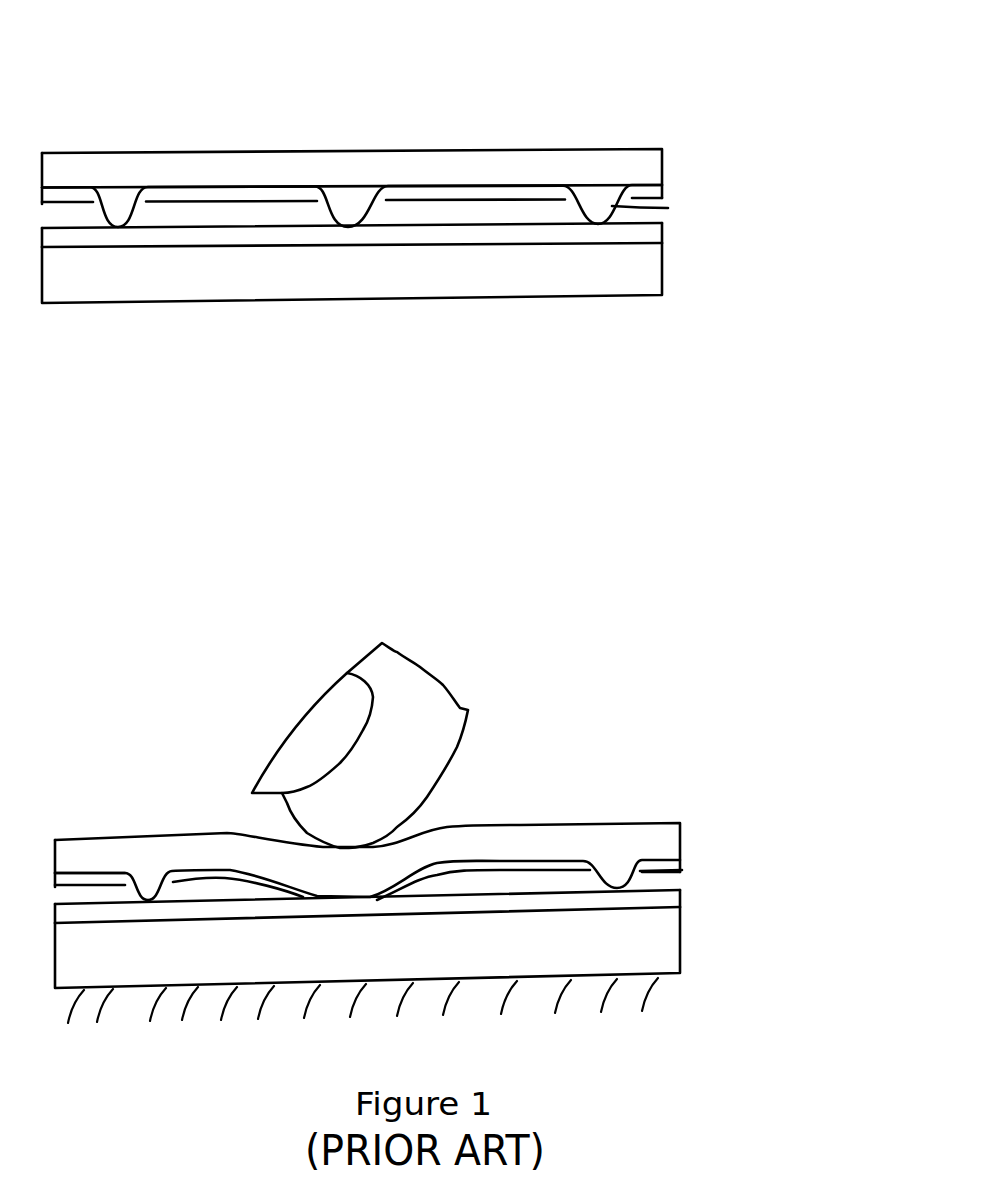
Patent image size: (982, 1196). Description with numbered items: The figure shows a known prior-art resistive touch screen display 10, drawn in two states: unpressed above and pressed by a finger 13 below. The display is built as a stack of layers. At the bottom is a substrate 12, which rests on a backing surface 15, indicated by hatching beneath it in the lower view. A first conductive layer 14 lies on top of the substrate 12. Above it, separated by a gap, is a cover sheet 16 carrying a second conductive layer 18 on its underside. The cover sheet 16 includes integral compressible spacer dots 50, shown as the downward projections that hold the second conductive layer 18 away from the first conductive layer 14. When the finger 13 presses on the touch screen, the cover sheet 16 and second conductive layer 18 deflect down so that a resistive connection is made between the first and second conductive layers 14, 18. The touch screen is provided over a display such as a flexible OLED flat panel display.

The resistive touch screen display 10 is at (712, 64).
The substrate 12 is at (660, 275).
The finger 13 is at (440, 750).
The first conductive layer 14 is at (667, 232).
The backing surface 15 is at (672, 985).
The cover sheet 16 is at (662, 160).
The second conductive layer 18 is at (662, 193).
The compressible spacer dots 50 is at (668, 208).